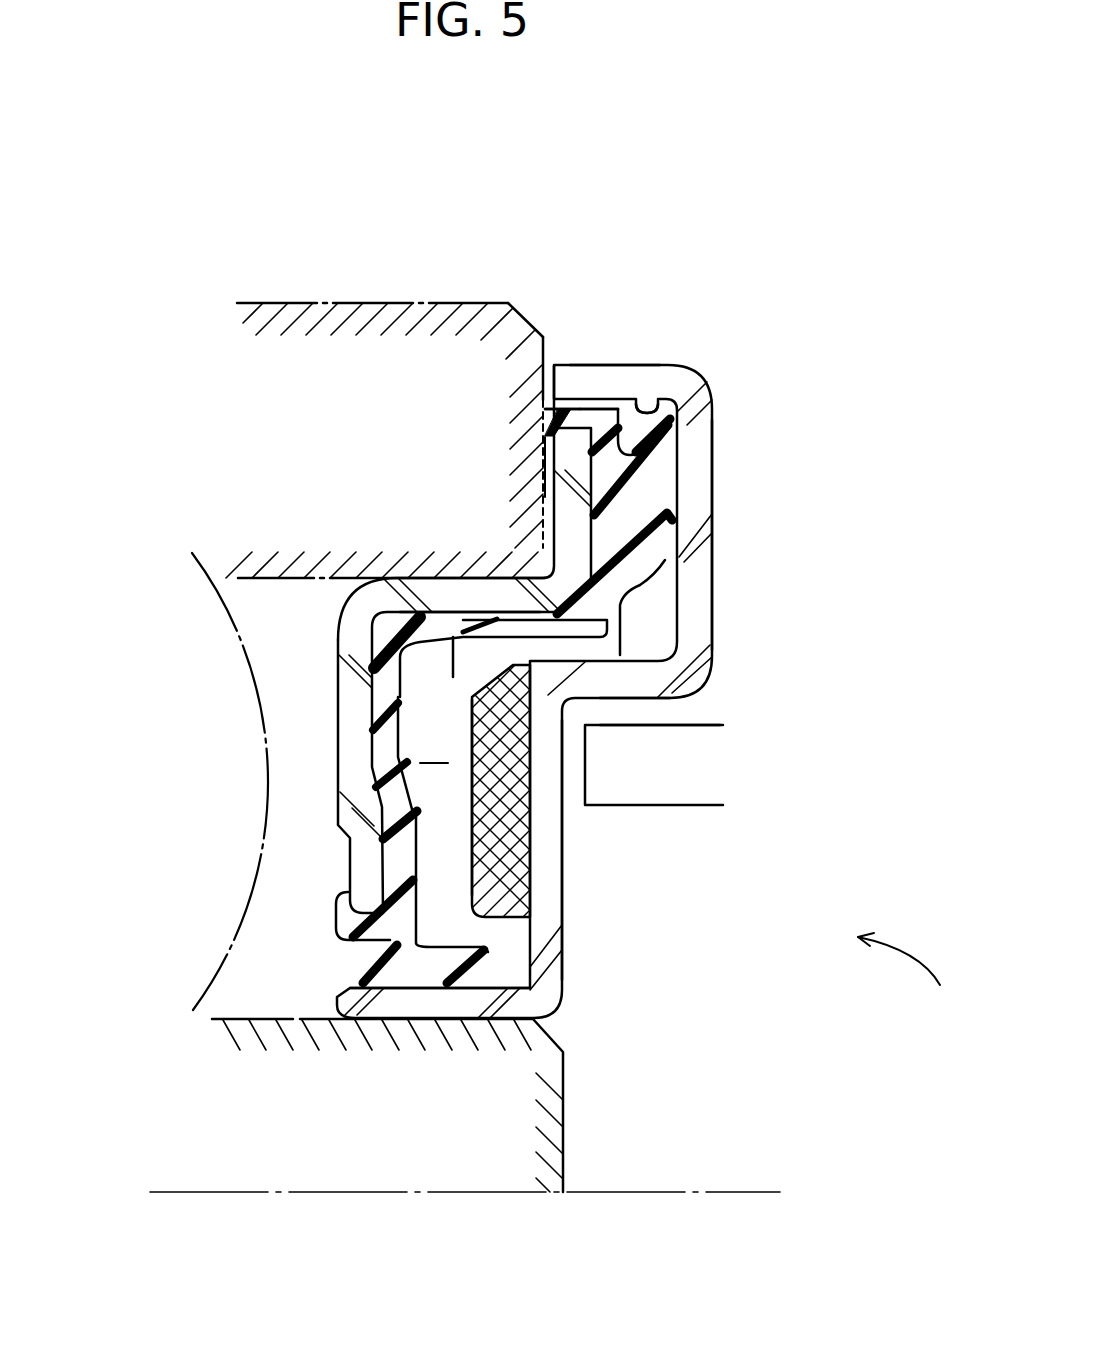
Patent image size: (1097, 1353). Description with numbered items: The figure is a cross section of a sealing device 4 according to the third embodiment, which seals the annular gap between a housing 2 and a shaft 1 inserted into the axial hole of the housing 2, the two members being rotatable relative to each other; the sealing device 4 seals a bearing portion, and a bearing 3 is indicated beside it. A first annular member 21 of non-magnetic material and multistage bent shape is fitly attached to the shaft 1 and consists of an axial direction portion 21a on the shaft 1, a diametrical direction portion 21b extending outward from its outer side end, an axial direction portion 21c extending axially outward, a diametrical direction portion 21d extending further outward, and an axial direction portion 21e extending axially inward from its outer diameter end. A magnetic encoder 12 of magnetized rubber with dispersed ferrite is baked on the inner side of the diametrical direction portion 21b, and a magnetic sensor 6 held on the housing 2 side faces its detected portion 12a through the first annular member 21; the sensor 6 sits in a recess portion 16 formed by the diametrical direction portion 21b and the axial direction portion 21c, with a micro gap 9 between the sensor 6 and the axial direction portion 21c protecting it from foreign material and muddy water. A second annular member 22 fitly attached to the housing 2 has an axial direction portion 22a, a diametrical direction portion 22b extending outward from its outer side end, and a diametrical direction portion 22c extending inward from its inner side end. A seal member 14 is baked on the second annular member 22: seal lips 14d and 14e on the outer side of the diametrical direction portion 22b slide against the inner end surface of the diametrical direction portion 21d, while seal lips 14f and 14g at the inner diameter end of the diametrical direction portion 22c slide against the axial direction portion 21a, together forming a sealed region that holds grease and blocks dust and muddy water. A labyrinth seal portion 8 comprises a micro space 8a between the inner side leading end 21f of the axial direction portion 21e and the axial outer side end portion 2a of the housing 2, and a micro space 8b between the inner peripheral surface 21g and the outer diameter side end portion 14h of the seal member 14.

The shaft 1 is at (553, 1132).
The housing 2 is at (299, 362).
The axial outer side end portion of the housing 2a is at (545, 385).
The bearing 3 is at (207, 575).
The sealing device 4 is at (906, 975).
The magnetic sensor 6 is at (680, 793).
The labyrinth seal portion 8 is at (697, 206).
The micro space 8a is at (548, 372).
The micro space 8b is at (587, 410).
The micro gap 9 is at (658, 713).
The magnetic encoder 12 is at (525, 875).
The detected portion 12a is at (470, 802).
The seal member 14 is at (454, 658).
The seal lip 14d is at (662, 436).
The seal lip 14e is at (672, 530).
The seal lip 14f is at (465, 980).
The seal lip 14g is at (385, 968).
The outer diameter side end portion of the seal member 14h is at (647, 377).
The recess portion 16 is at (607, 910).
The first annular member 21 is at (587, 734).
The axial direction portion 21a is at (469, 1005).
The diametrical direction portion 21b is at (543, 810).
The axial direction portion 21c is at (630, 683).
The diametrical direction portion 21d is at (700, 588).
The axial direction portion 21e is at (648, 374).
The inner side leading end 21f is at (552, 386).
The inner peripheral surface 21g is at (678, 402).
The second annular member 22 is at (330, 645).
The axial direction portion 22a is at (415, 588).
The diametrical direction portion 22b is at (590, 508).
The diametrical direction portion 22c is at (350, 879).